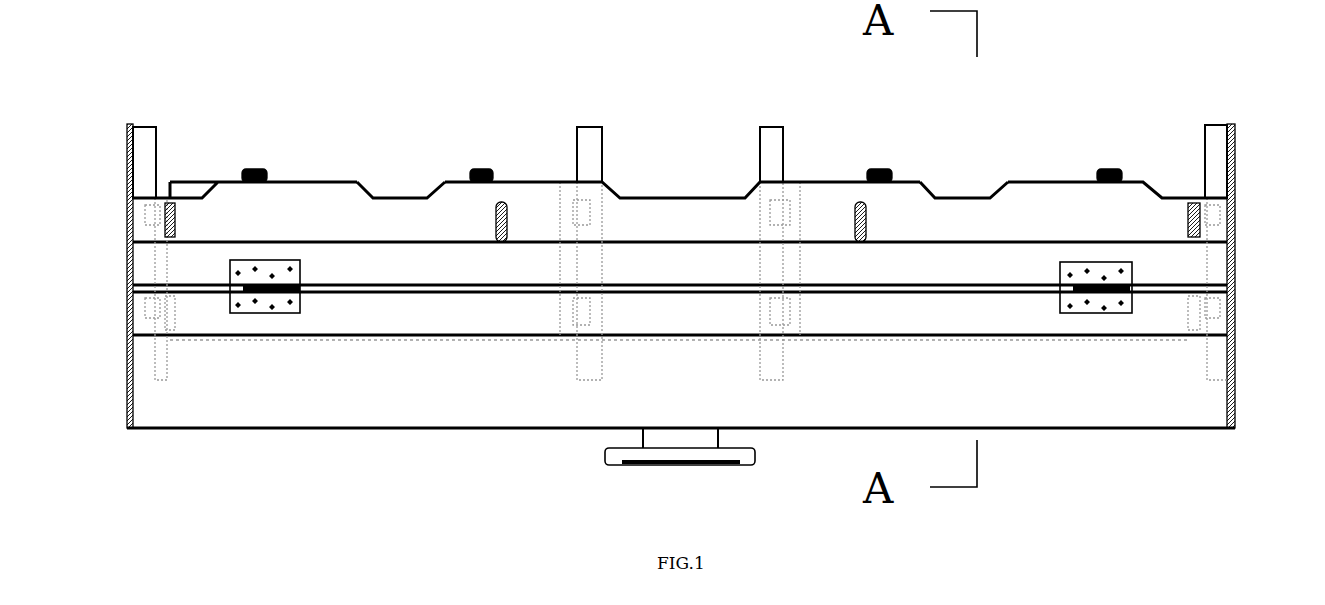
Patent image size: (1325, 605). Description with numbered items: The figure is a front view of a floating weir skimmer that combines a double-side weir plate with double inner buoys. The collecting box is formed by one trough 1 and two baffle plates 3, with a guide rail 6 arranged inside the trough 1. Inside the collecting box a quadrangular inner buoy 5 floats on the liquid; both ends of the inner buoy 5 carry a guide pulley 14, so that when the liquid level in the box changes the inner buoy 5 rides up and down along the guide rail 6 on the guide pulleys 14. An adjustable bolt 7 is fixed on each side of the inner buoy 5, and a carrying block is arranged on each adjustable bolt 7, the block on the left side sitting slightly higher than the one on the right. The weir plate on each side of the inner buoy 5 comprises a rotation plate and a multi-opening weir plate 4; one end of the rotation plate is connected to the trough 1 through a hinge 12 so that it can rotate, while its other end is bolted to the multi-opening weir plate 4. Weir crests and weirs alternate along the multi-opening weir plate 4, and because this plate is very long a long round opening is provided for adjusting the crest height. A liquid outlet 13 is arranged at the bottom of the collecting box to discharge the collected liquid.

The trough 1 is at (153, 398).
The baffle plate 3 is at (127, 190).
The multi-opening weir plate 4 is at (393, 198).
The inner buoy 5 is at (330, 180).
The guide rail 6 is at (153, 157).
The adjustable bolt 7 is at (250, 166).
The hinge 12 is at (1103, 258).
The liquid outlet 13 is at (612, 470).
The guide pulley 14 is at (570, 202).